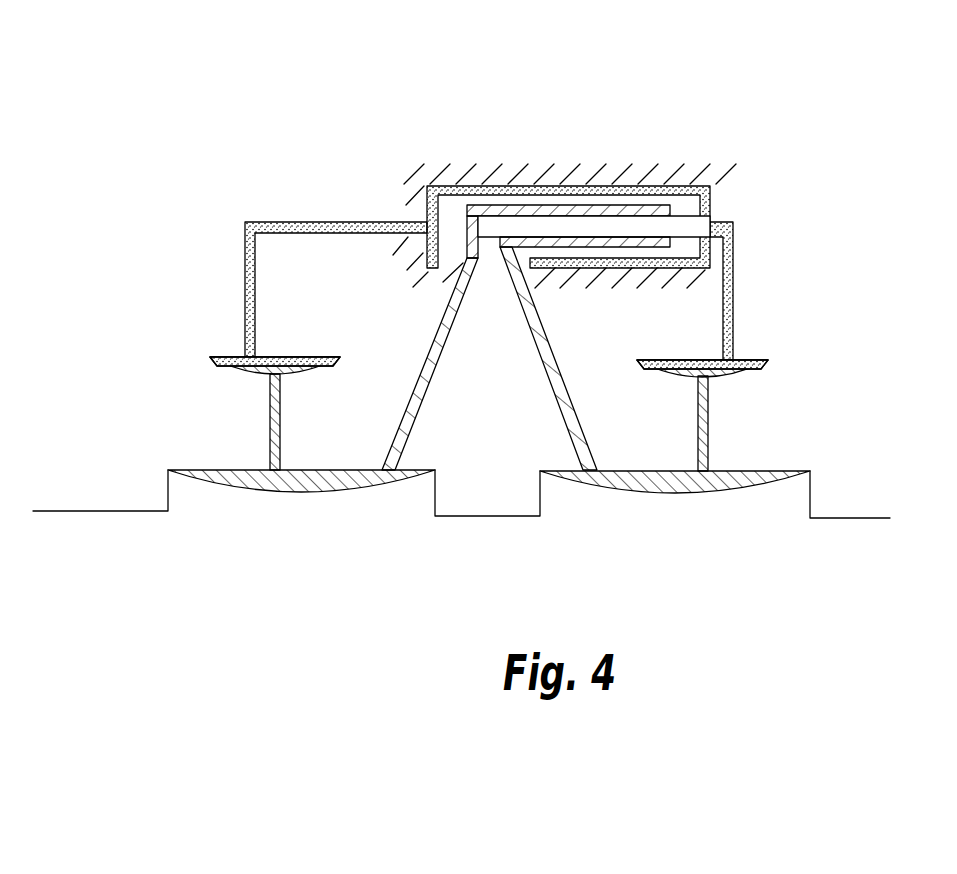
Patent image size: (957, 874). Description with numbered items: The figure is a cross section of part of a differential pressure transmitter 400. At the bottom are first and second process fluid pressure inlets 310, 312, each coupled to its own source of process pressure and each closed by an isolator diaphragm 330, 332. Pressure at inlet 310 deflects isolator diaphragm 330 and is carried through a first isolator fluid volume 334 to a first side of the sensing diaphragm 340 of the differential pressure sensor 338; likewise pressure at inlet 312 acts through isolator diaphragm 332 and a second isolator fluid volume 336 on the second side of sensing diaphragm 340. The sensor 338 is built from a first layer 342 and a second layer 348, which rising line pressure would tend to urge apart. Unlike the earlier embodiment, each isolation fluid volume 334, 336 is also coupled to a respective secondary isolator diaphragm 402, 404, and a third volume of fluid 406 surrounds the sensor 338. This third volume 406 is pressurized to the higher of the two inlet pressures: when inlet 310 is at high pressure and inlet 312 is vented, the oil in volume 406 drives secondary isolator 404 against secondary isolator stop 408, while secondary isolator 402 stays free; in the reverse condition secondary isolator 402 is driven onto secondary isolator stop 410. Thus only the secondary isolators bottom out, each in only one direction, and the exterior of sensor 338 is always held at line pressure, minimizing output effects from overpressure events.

The differential pressure transmitter 400 is at (508, 120).
The differential pressure sensor 338 is at (424, 188).
The first layer 342 is at (711, 197).
The sensing diaphragm 340 is at (713, 223).
The second layer 348 is at (571, 269).
The third volume of fluid 406 is at (251, 222).
The secondary isolator diaphragm 402 is at (253, 373).
The secondary isolator stop 410 is at (291, 378).
The secondary isolator stop 408 is at (657, 372).
The secondary isolator diaphragm 404 is at (735, 378).
The first isolator fluid volume 334 is at (298, 475).
The second isolator fluid volume 336 is at (614, 478).
The isolator diaphragm 330 is at (240, 488).
The isolator diaphragm 332 is at (738, 492).
The process fluid pressure inlet 310 is at (342, 543).
The process fluid pressure inlet 312 is at (669, 551).